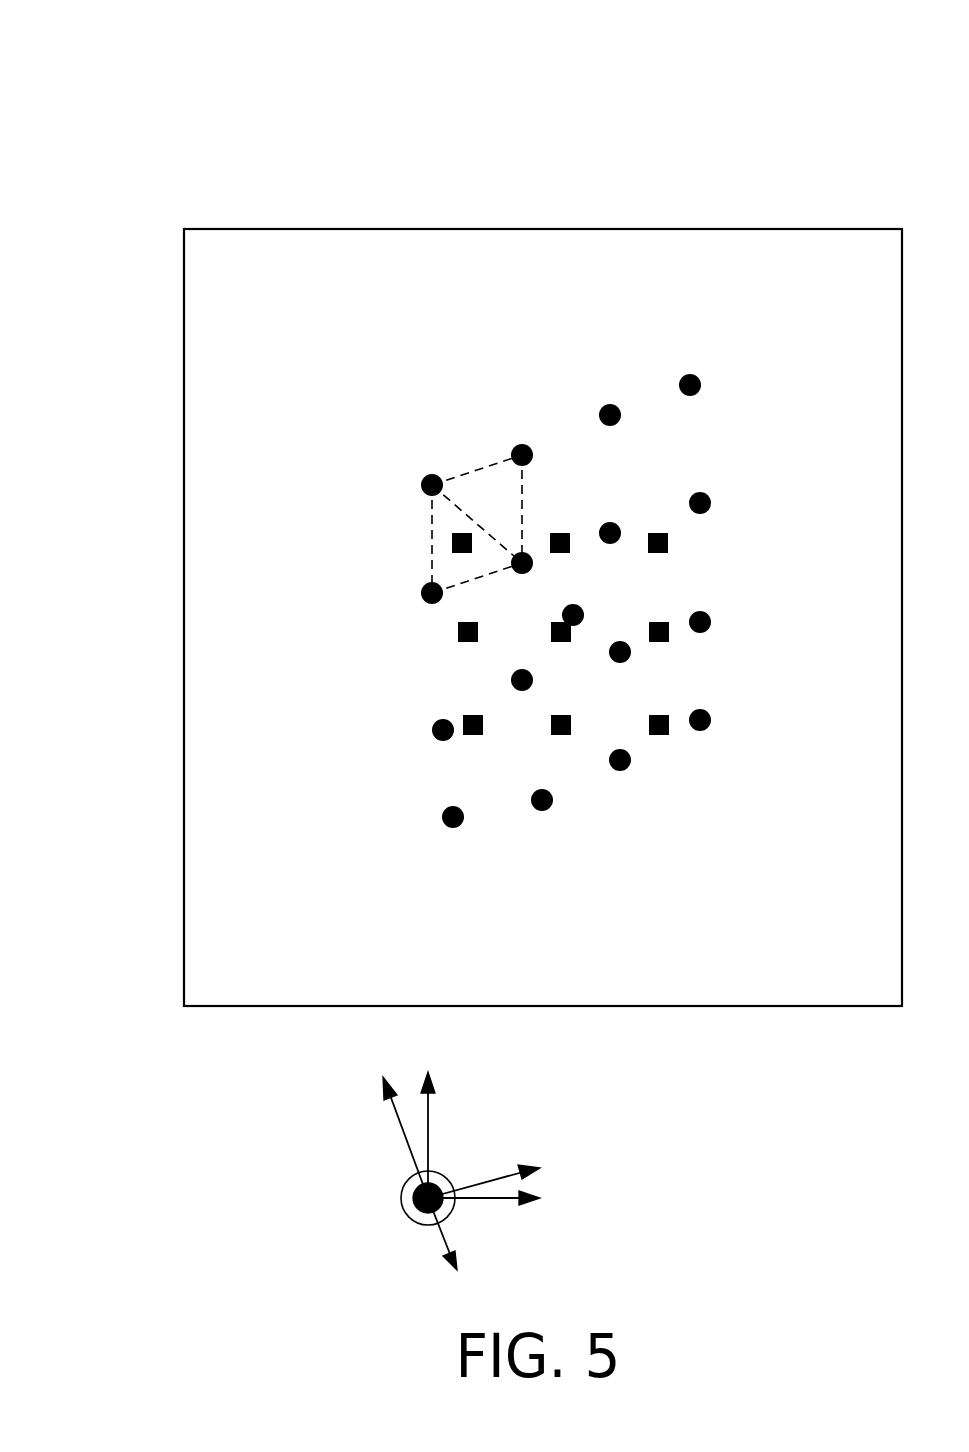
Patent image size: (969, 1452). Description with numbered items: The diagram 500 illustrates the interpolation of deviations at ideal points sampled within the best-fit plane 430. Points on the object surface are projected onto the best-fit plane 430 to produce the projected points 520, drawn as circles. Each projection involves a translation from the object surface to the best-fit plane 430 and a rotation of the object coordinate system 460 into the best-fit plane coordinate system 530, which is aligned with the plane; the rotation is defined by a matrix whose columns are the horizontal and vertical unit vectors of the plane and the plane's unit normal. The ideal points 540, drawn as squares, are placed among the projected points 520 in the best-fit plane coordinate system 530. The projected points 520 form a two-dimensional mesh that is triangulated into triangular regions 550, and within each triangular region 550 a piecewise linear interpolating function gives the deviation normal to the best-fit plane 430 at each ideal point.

The diagram of projected pattern and coordinate frames 500 is at (88, 61).
The best-fit plane 430 is at (286, 288).
The projected points 520 is at (443, 824).
The ideal points 540 is at (668, 734).
The triangular regions 550 is at (430, 533).
The object coordinate system 460 is at (392, 1108).
The best-fit plane coordinate system 530 is at (428, 1128).